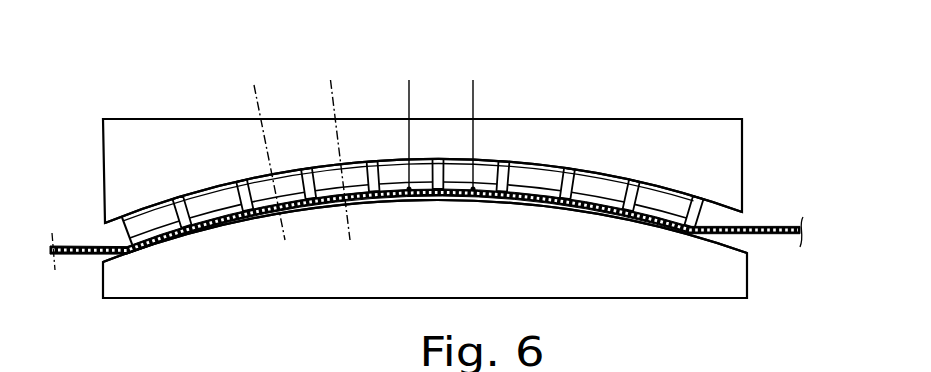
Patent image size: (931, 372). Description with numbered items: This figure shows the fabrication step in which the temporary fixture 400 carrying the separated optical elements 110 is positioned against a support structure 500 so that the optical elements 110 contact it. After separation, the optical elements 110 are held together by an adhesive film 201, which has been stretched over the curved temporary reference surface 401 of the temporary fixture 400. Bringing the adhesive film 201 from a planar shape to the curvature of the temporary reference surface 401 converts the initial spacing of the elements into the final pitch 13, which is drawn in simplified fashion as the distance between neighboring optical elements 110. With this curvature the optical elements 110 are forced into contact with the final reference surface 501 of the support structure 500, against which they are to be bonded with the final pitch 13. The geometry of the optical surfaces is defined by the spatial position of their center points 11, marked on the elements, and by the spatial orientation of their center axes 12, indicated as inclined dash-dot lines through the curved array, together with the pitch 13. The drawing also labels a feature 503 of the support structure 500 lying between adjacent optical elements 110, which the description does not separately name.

The center point 11 is at (409, 189).
The center axis 12 is at (329, 80).
The pitch 13 is at (409, 90).
The optical element 110 is at (142, 216).
The adhesive film 201 is at (773, 227).
The temporary fixture 400 is at (748, 282).
The temporary reference surface 401 is at (742, 243).
The support structure 500 is at (742, 136).
The final reference surface 501 is at (713, 202).
The partition rib 503 is at (577, 170).